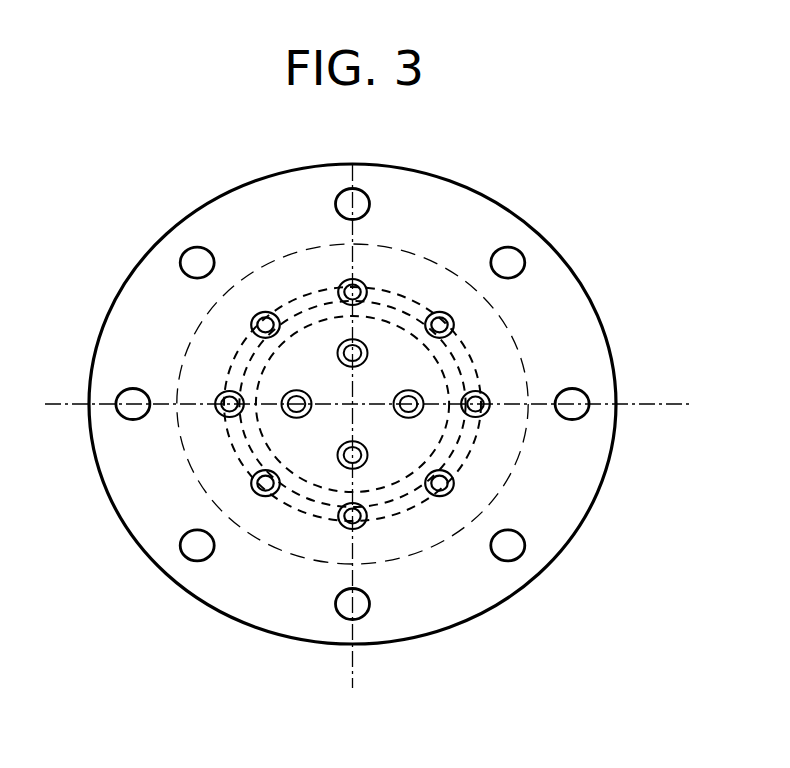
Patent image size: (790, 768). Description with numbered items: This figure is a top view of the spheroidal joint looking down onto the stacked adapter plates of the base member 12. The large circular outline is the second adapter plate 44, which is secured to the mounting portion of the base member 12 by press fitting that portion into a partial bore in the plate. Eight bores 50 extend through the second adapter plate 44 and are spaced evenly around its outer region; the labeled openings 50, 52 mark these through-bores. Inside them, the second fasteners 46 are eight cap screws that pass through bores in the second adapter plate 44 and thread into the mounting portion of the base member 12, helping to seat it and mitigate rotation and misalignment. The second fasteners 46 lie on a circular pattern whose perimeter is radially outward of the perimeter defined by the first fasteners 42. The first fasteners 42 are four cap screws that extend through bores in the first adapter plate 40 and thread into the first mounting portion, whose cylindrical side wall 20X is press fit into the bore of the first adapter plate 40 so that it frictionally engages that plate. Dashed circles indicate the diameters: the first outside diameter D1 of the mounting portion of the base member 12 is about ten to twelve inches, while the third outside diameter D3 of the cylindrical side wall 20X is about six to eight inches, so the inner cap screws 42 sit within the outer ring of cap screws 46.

The base member 12 is at (518, 363).
The cylindrical side wall 20X is at (328, 553).
The first adapter plate 40 is at (369, 404).
The second adapter plate 44 is at (585, 289).
The first fasteners 42 is at (364, 348).
The second fasteners 46 is at (345, 282).
The bores 50 is at (376, 364).
The bolt hole openings 52 is at (360, 203).
The first outside diameter D1 is at (147, 328).
The third outside diameter D3 is at (293, 268).